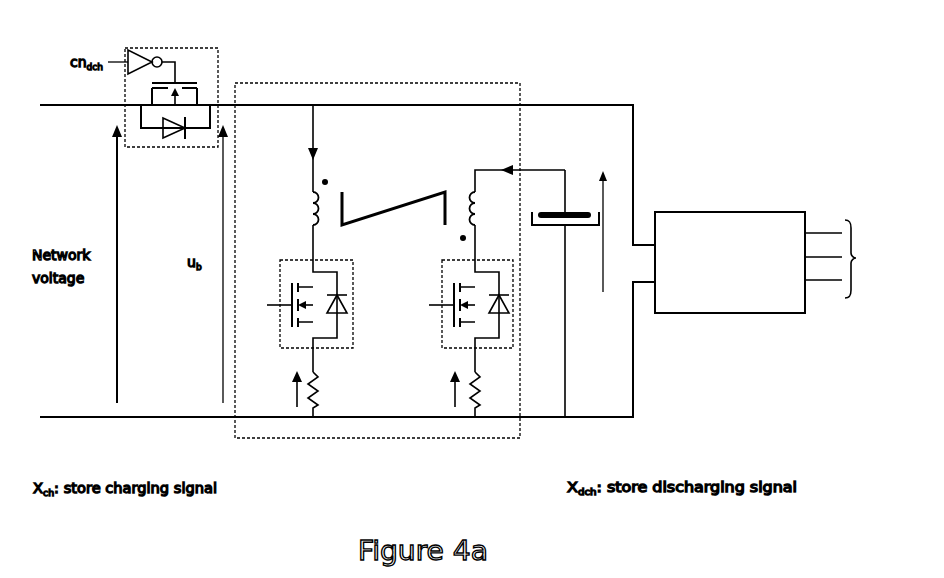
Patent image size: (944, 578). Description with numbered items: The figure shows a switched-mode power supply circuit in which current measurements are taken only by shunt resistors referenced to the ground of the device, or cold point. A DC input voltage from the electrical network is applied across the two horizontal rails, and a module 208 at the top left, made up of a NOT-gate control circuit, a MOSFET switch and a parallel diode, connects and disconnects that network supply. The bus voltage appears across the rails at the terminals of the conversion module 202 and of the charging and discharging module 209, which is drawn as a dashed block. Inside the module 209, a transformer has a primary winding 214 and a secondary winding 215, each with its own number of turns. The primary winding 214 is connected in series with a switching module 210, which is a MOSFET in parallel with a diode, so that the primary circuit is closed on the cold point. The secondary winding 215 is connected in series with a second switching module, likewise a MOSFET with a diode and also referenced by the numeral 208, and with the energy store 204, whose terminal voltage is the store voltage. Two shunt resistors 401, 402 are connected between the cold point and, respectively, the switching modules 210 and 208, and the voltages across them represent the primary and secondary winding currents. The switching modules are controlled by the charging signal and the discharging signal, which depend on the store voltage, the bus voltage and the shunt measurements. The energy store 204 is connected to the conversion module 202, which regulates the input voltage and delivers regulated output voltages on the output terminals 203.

The conversion module 202 is at (697, 212).
The output terminals 203 is at (857, 260).
The energy store 204 is at (577, 212).
The module for connecting and disconnecting the supply 208 is at (220, 70).
The charging and discharging module 209 is at (515, 82).
The switching module 210 is at (318, 259).
The primary winding 214 is at (307, 190).
The secondary winding 215 is at (458, 190).
The shunt resistor 401 is at (320, 383).
The shunt resistor 402 is at (483, 392).